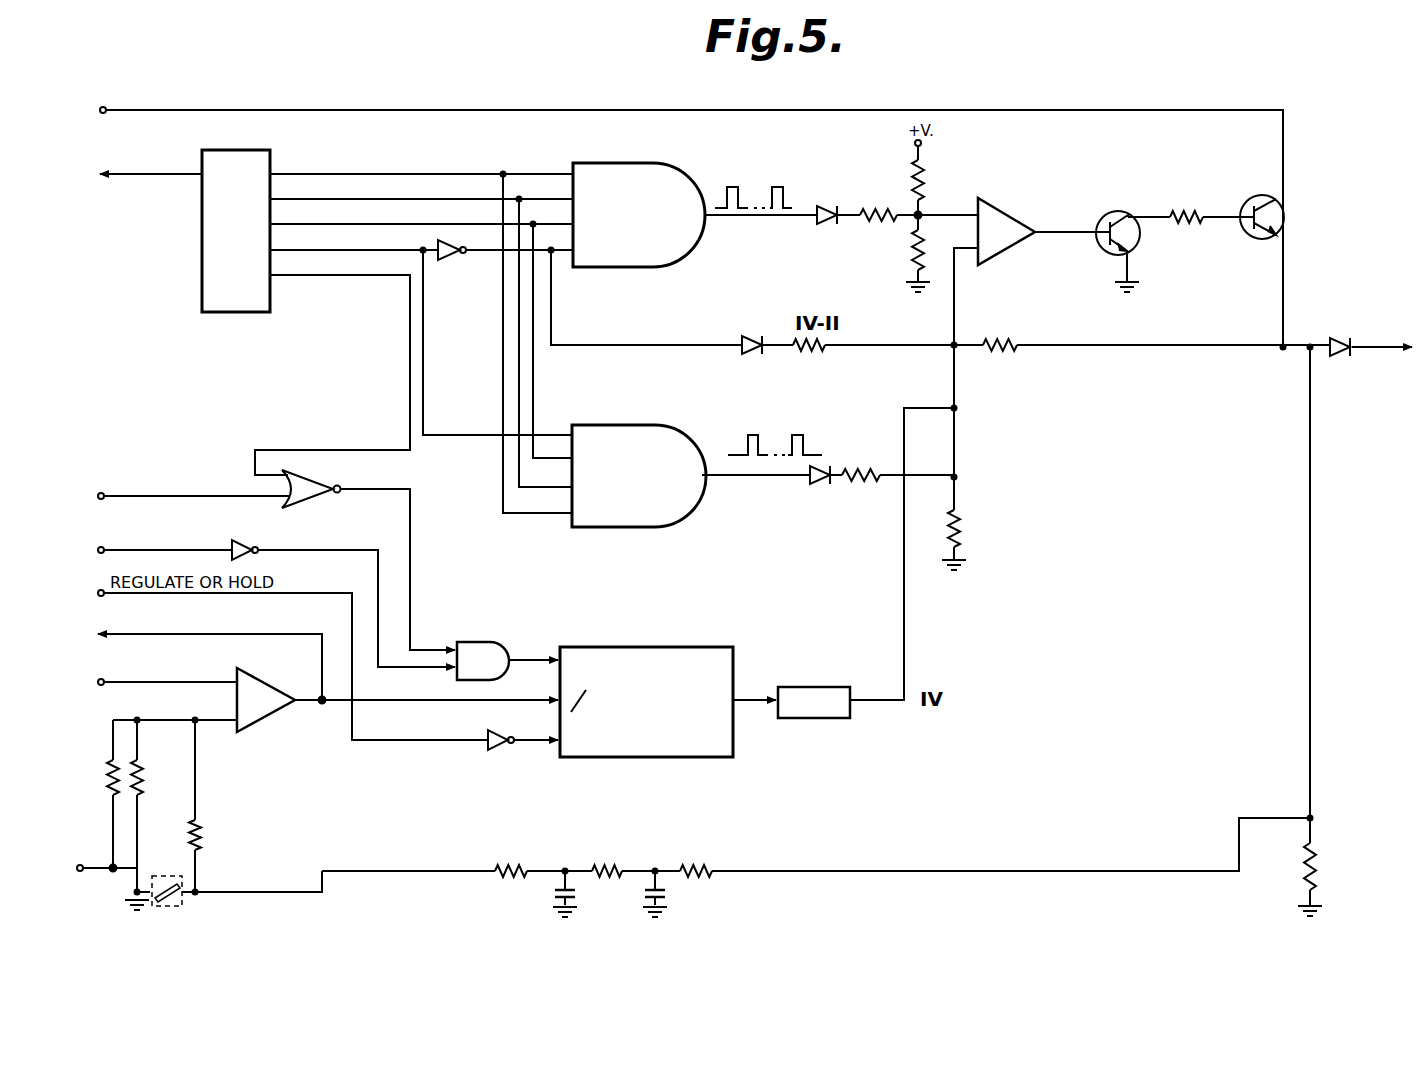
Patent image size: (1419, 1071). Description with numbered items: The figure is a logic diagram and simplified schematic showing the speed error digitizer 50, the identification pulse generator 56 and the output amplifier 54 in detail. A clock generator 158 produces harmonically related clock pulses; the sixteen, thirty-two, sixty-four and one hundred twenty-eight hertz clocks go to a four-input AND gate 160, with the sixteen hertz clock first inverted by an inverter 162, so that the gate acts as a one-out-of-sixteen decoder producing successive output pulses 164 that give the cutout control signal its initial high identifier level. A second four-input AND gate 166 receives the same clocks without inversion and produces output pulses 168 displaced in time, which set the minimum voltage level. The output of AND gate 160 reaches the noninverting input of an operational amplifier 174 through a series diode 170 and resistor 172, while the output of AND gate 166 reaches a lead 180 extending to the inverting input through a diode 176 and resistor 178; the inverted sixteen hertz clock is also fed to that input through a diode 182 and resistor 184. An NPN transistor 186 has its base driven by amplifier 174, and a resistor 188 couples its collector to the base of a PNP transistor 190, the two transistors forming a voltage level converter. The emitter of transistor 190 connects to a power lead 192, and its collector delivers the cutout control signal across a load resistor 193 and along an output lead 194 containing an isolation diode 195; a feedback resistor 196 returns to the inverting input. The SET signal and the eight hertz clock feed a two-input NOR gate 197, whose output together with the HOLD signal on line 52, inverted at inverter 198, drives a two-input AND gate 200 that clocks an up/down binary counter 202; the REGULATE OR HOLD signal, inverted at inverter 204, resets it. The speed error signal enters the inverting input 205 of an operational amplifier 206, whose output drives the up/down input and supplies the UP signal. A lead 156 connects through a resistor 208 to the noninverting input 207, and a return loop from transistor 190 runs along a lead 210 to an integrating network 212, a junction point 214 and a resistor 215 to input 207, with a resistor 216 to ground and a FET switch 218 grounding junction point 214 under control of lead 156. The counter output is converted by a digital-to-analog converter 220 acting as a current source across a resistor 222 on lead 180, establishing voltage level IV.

The speed error digitizer 50 is at (743, 776).
The line 52 is at (204, 548).
The output amplifier 54 is at (1057, 202).
The identification pulse generator 56 is at (640, 159).
The lead 156 is at (100, 862).
The clock generator 158 is at (202, 300).
The four-input AND gate 160 is at (670, 268).
The inverter 162 is at (448, 262).
The output pulses 164 is at (728, 186).
The four-input AND gate 166 is at (660, 528).
The output pulses 168 is at (743, 440).
The diode 170 is at (828, 226).
The resistor 172 is at (894, 208).
The operational amplifier 174 is at (995, 258).
The diode 176 is at (818, 486).
The resistor 178 is at (870, 482).
The lead 180 is at (955, 445).
The diode 182 is at (742, 344).
The resistor 184 is at (820, 352).
The NPN transistor 186 is at (1108, 217).
The resistor 188 is at (1198, 225).
The PNP transistor 190 is at (1280, 207).
The power lead 192 is at (414, 112).
The load resistor 193 is at (1318, 866).
The output lead 194 is at (1388, 351).
The isolation diode 195 is at (1346, 342).
The feedback resistor 196 is at (1000, 338).
The two-input NOR gate 197 is at (312, 468).
The inverter 198 is at (246, 542).
The two-input AND gate 200 is at (472, 642).
The up/down binary counter 202 is at (676, 646).
The inverter 204 is at (500, 752).
The inverting input 205 is at (234, 684).
The operational amplifier 206 is at (270, 687).
The noninverting input 207 is at (236, 722).
The resistor 208 is at (108, 766).
The lead 210 is at (1074, 872).
The integrating network 212 is at (655, 868).
The junction point 214 is at (197, 893).
The resistor 215 is at (202, 838).
The resistor 216 is at (145, 766).
The FET switch 218 is at (176, 904).
The digital-to-analog converter 220 is at (801, 687).
The resistor 222 is at (960, 530).